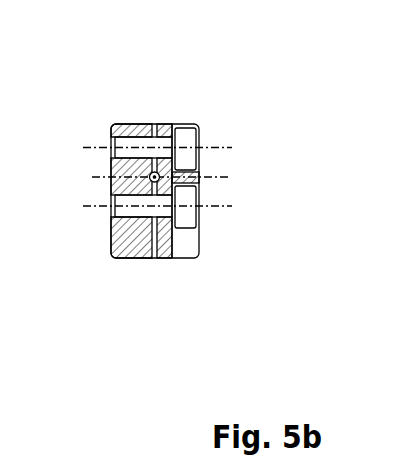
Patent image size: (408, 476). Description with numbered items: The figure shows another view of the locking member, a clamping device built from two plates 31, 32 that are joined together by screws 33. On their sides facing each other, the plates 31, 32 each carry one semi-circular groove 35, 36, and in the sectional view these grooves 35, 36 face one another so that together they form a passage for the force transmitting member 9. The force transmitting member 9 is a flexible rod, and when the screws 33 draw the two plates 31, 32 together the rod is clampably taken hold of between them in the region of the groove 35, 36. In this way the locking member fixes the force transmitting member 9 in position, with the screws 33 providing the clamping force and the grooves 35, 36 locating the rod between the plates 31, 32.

The force transmitting member 9 is at (157, 172).
The plate 31 is at (114, 237).
The plate 32 is at (189, 246).
The screws 33 is at (187, 134).
The semi-circular groove 35 is at (148, 175).
The semi-circular groove 36 is at (197, 175).